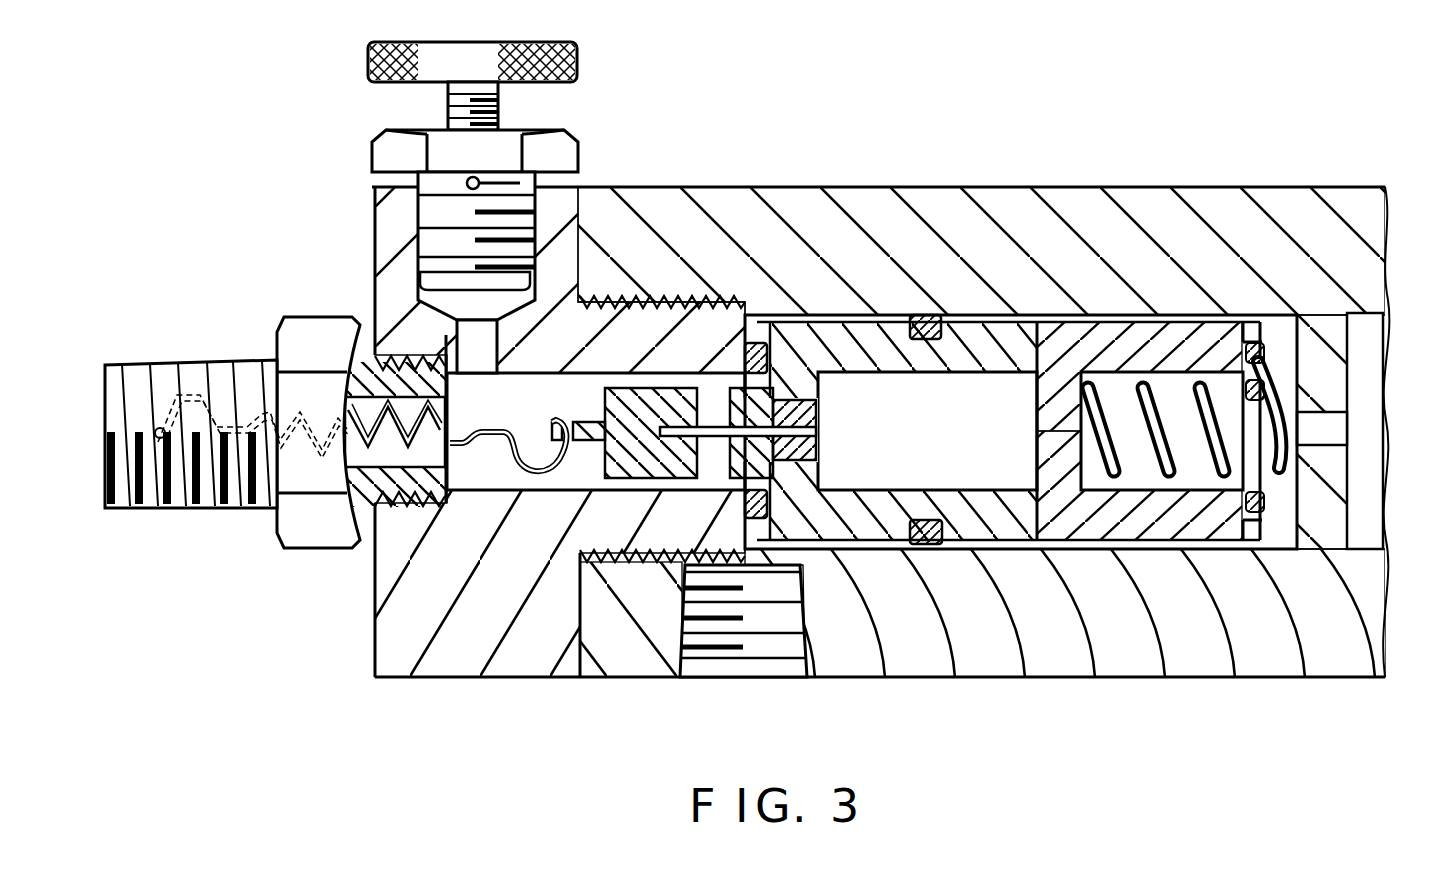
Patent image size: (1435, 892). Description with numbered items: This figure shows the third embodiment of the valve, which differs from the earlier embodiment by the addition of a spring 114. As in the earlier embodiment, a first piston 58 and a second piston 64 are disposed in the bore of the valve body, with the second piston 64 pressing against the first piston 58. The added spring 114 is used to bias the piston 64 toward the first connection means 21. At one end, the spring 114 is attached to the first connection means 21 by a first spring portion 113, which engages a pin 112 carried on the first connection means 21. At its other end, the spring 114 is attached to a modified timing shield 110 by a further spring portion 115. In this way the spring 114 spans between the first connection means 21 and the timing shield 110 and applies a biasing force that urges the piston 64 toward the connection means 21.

The first connection means 21 is at (297, 308).
The first piston 58 is at (975, 525).
The second piston 64 is at (1132, 520).
The modified timing shield 110 is at (592, 440).
The pin 112 is at (162, 428).
The first spring portion 113 is at (190, 400).
The spring 114 is at (437, 448).
The spring portion 115 is at (517, 470).